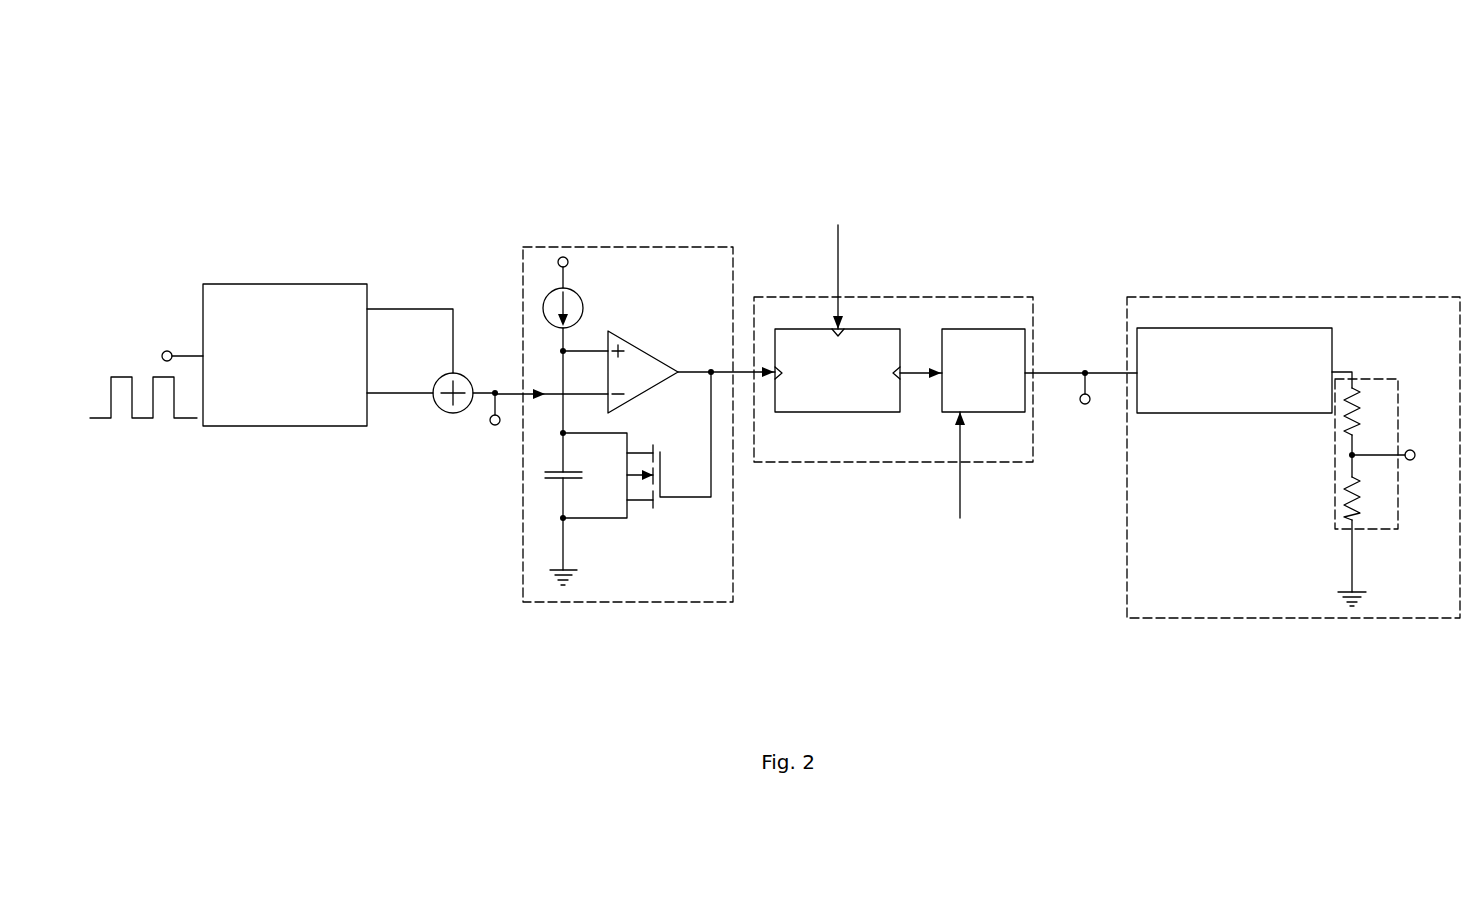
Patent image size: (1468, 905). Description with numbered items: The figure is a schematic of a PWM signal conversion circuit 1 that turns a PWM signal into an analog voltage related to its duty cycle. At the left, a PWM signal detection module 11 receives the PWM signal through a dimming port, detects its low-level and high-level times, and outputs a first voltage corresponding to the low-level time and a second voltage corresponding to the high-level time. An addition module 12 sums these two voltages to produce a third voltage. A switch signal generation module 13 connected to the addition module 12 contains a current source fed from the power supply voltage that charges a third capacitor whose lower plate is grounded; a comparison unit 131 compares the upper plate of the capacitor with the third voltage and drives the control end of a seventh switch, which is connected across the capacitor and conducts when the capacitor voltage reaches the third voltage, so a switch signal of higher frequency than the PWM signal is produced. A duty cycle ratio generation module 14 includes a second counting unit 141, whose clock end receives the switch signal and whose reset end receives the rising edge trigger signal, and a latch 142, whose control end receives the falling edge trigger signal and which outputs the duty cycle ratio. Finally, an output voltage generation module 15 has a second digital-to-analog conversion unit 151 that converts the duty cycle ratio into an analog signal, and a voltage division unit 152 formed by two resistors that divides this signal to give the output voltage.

The PWM signal conversion circuit 1 is at (1073, 250).
The PWM signal detection module 11 is at (272, 284).
The addition module 12 is at (459, 374).
The switch signal generation module 13 is at (635, 451).
The comparison unit 131 is at (645, 345).
The duty cycle ratio generation module 14 is at (893, 368).
The second counting unit 141 is at (843, 412).
The latch 142 is at (950, 412).
The output voltage generation module 15 is at (1293, 435).
The second digital-to-analog conversion unit 151 is at (1243, 413).
The voltage division unit 152 is at (1378, 378).